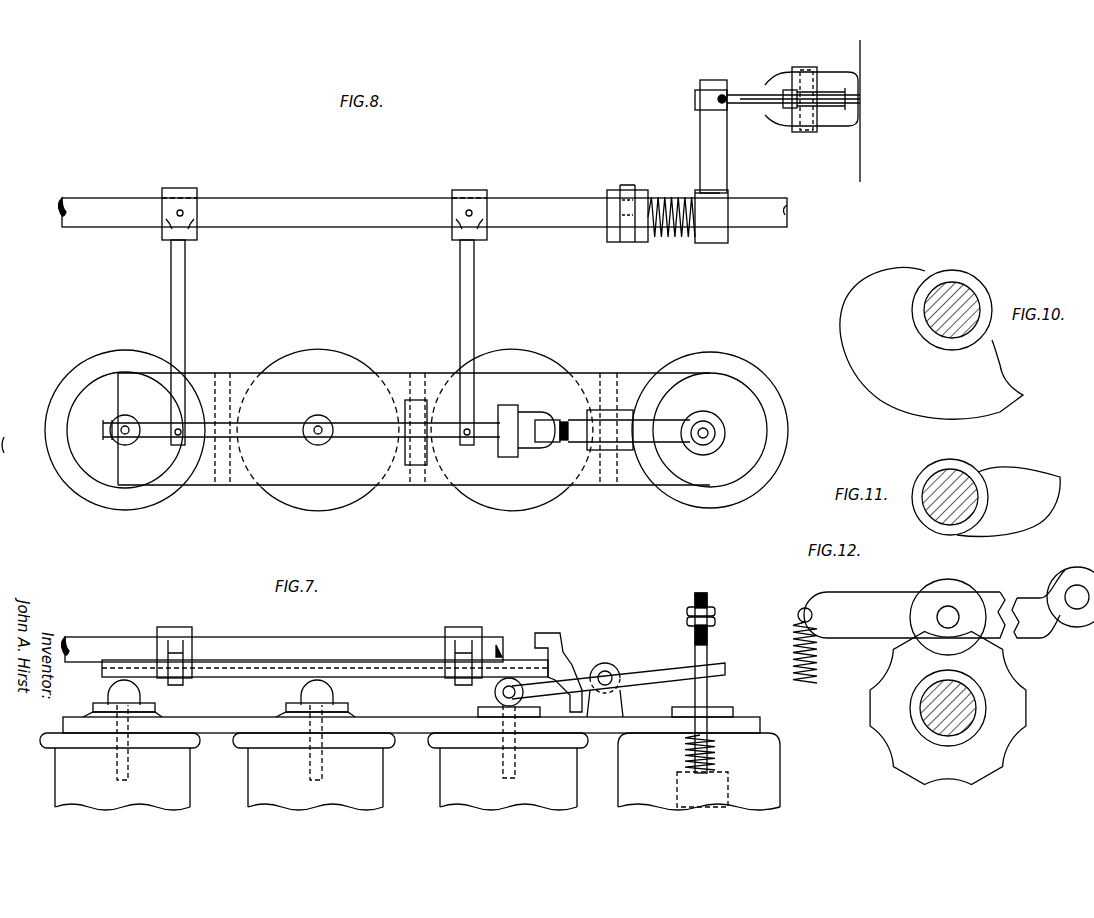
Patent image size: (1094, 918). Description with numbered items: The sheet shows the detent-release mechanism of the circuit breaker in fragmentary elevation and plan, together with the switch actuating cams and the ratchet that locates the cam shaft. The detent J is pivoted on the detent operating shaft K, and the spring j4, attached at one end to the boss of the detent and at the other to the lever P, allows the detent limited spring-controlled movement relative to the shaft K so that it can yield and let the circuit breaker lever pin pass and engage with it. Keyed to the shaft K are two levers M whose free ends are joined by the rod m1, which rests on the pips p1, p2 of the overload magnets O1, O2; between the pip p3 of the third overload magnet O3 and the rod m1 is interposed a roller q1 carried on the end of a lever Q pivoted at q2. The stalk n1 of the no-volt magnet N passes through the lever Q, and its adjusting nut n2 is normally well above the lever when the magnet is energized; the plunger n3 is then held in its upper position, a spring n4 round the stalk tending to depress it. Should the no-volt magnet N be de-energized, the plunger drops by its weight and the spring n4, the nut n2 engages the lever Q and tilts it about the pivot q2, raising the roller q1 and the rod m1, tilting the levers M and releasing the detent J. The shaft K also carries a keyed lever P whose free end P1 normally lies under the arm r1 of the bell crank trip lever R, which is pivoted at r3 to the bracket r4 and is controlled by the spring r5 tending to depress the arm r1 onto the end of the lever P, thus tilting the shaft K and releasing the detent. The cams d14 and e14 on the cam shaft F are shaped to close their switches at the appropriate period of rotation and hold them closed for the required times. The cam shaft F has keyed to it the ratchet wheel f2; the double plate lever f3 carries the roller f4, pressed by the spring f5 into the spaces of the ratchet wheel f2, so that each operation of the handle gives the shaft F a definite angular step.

In FIG. 8, the detent operating shaft K is at (305, 206).
In FIG. 7, the detent operating shaft K is at (370, 643).
In FIG. 8, the levers M is at (180, 294).
In FIG. 7, the levers M is at (172, 632).
In FIG. 8, the rod m1 is at (250, 428).
In FIG. 7, the rod m1 is at (232, 668).
In FIG. 8, the overload magnet O1 is at (100, 352).
In FIG. 7, the overload magnet O1 is at (180, 777).
In FIG. 8, the overload magnet O2 is at (333, 352).
In FIG. 7, the overload magnet O2 is at (373, 782).
In FIG. 8, the third overload magnet O3 is at (535, 352).
In FIG. 7, the third overload magnet O3 is at (567, 786).
In FIG. 8, the no-volt magnet N is at (720, 357).
In FIG. 7, the no-volt magnet N is at (783, 756).
In FIG. 8, the free end of lever P p1 is at (120, 418).
In FIG. 7, the free end of lever P p1 is at (108, 690).
In FIG. 8, the dome pivot p2 is at (330, 418).
In FIG. 7, the dome pivot p2 is at (334, 692).
In FIG. 7, the dome pivot p3 is at (530, 765).
In FIG. 8, the roller q1 is at (515, 418).
In FIG. 7, the roller q1 is at (495, 690).
In FIG. 7, the pivot q2 is at (605, 662).
In FIG. 8, the lever Q is at (655, 425).
In FIG. 7, the lever Q is at (653, 672).
In FIG. 8, the stalk n1 is at (703, 440).
In FIG. 7, the stalk n1 is at (709, 648).
In FIG. 8, the adjusting nut n2 is at (710, 422).
In FIG. 7, the adjusting nut n2 is at (712, 612).
In FIG. 7, the plunger n3 is at (717, 789).
In FIG. 7, the spring n4 is at (718, 756).
In FIG. 8, the detent J is at (628, 186).
In FIG. 8, the spring j4 is at (674, 240).
In FIG. 8, the lever P is at (720, 172).
In FIG. 8, the free end of lever P P1 is at (712, 88).
In FIG. 8, the arm r1 is at (694, 101).
In FIG. 8, the trip lever R is at (780, 78).
In FIG. 8, the pivot r3 is at (805, 132).
In FIG. 8, the bracket r4 is at (826, 80).
In FIG. 8, the spring r5 is at (772, 108).
In FIG. 10, the cam shaft F is at (965, 298).
In FIG. 11, the cam shaft F is at (945, 488).
In FIG. 12, the cam shaft F is at (965, 700).
In FIG. 10, the cam d14 is at (885, 380).
In FIG. 11, the cam e14 is at (1010, 487).
In FIG. 12, the ratchet wheel f2 is at (890, 715).
In FIG. 12, the double plate lever f3 is at (868, 630).
In FIG. 12, the roller f4 is at (962, 600).
In FIG. 12, the spring f5 is at (808, 684).